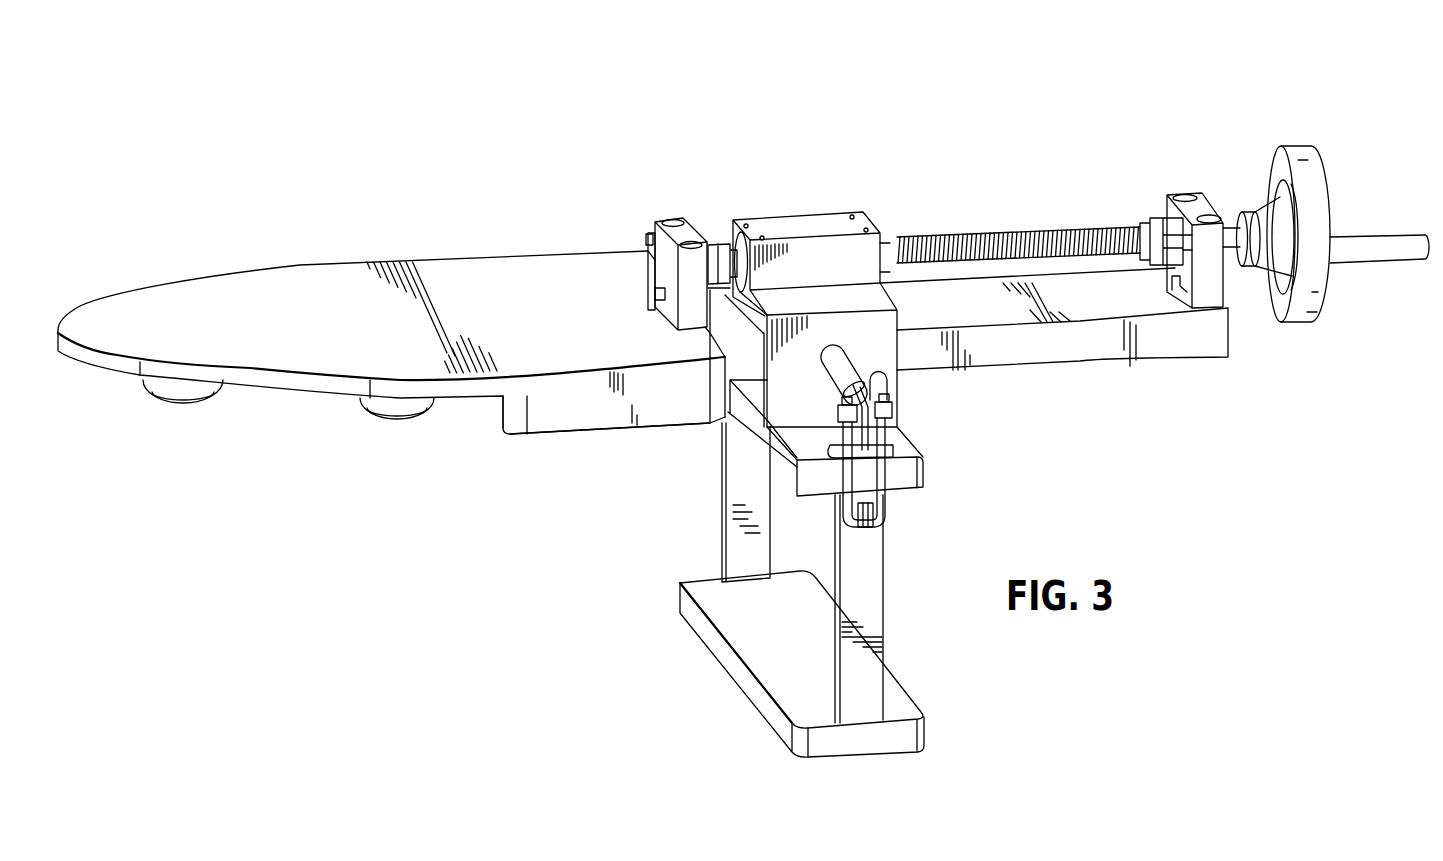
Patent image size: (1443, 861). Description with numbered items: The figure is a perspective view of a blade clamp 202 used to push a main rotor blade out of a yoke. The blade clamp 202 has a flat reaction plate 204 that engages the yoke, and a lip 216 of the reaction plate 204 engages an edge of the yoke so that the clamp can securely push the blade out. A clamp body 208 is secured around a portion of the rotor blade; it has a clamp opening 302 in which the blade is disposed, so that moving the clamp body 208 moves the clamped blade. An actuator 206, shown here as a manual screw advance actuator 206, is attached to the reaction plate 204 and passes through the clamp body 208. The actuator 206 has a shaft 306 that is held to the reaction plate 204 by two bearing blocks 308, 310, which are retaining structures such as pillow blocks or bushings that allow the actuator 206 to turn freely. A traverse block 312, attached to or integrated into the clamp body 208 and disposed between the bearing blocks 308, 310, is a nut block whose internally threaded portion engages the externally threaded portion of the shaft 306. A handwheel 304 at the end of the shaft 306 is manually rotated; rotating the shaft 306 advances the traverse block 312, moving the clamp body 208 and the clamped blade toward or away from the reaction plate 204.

The blade clamp 202 is at (582, 77).
The reaction plate 204 is at (222, 287).
The actuator 206 is at (622, 141).
The clamp body 208 is at (735, 765).
The lip 216 is at (495, 423).
The clamp opening 302 is at (751, 643).
The handwheel 304 is at (1236, 336).
The shaft 306 is at (1012, 242).
The bearing block 308 is at (1182, 194).
The bearing block 310 is at (678, 217).
The traverse block 312 is at (800, 215).